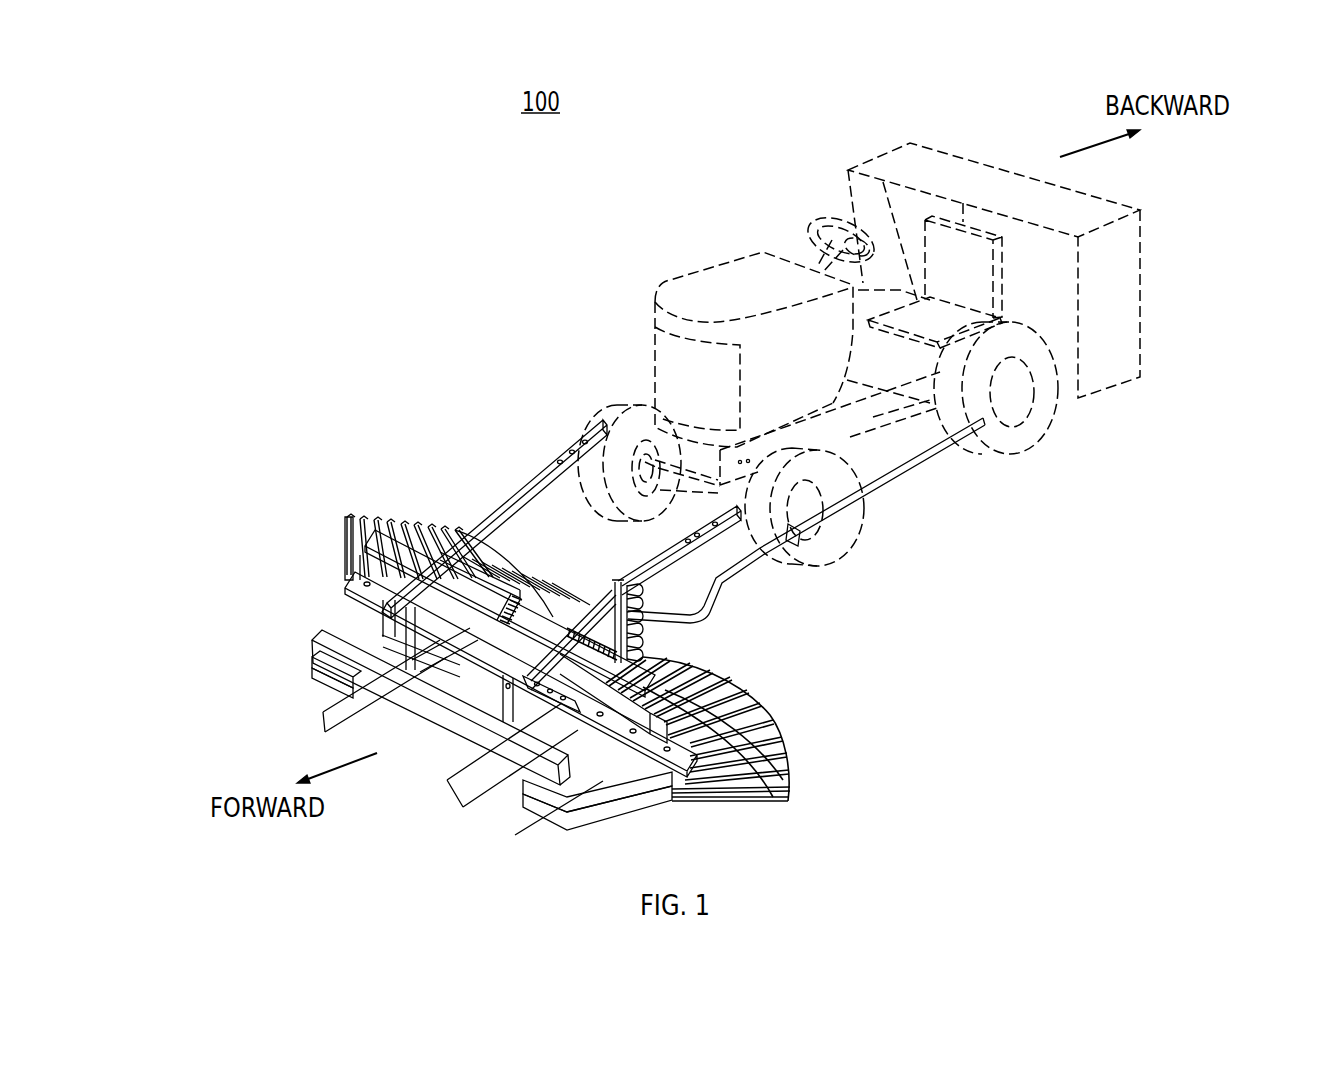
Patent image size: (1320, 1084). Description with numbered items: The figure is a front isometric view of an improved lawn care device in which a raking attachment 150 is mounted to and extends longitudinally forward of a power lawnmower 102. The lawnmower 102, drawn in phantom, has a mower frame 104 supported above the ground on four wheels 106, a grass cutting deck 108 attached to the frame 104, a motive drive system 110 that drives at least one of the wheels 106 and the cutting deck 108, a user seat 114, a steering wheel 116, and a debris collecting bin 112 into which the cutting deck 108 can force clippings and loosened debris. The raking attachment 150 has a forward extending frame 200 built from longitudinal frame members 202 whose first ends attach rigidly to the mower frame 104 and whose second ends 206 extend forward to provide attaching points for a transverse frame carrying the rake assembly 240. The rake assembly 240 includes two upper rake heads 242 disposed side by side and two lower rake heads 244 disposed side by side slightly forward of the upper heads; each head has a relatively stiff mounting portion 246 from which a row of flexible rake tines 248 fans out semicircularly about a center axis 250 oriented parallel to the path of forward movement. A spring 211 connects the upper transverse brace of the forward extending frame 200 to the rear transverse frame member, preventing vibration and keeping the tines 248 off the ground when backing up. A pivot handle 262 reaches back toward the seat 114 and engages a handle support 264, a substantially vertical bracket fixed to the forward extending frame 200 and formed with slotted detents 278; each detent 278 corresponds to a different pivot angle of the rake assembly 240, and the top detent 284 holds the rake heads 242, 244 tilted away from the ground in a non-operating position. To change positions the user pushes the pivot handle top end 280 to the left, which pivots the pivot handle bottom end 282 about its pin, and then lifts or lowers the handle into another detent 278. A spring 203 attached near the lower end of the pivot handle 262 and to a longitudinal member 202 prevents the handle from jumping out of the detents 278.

The power lawnmower 102 is at (556, 243).
The mower frame 104 is at (872, 512).
The wheels 106 is at (1018, 405).
The grass cutting deck 108 is at (945, 462).
The motive drive system 110 is at (712, 264).
The collection bin 112 is at (1058, 200).
The user seat 114 is at (912, 316).
The steering wheel 116 is at (820, 226).
The raking attachment 150 is at (368, 322).
The forward extending frame 200 is at (474, 509).
The longitudinal frame member 202 is at (514, 495).
The spring 203 is at (610, 642).
The second end 206 is at (380, 518).
The spring 211 is at (517, 596).
The rake assembly 240 is at (317, 707).
The upper rake heads 242 is at (330, 658).
The lower rake heads 244 is at (312, 671).
The mounting portion 246 is at (345, 600).
The flexible rake tines 248 is at (342, 555).
The center axis 250 is at (757, 679).
The pivot handle 262 is at (795, 540).
The handle support 264 is at (612, 578).
The slotted detents 278 is at (616, 641).
The pivot handle top end 280 is at (958, 440).
The pivot handle bottom end 282 is at (512, 720).
The top detent 284 is at (644, 602).